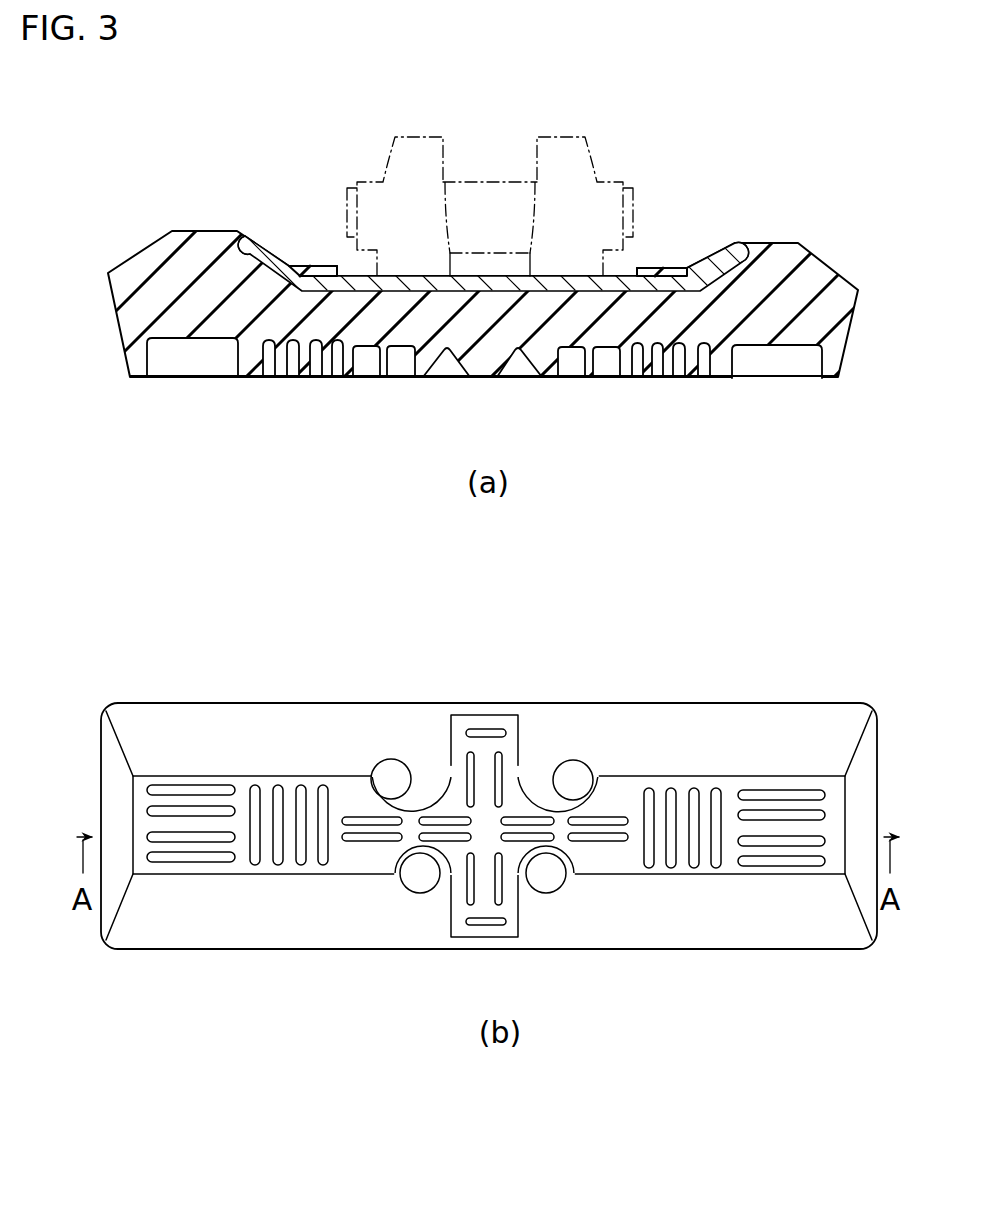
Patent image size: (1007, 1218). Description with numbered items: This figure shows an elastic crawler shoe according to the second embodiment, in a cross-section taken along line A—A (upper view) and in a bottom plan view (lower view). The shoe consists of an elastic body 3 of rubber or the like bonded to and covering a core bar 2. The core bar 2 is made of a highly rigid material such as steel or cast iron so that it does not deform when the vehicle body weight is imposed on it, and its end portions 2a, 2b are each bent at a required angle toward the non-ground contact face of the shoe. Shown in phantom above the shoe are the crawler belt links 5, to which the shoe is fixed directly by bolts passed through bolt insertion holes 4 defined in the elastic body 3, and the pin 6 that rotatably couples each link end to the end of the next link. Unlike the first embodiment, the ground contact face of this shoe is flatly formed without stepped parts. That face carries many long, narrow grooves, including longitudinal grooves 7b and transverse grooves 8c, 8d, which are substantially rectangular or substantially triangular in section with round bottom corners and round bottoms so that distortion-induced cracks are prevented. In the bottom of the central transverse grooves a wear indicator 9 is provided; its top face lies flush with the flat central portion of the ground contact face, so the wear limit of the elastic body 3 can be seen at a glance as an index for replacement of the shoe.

The core bar 2 is at (618, 278).
The end portion of the core bar 2a is at (250, 263).
The end portion of the core bar 2b is at (733, 262).
The elastic body 3 is at (158, 250).
The bolt insertion holes 4 is at (392, 762).
The crawler belt links 5 is at (385, 175).
The pin 6 is at (505, 173).
The longitudinal grooves 7b is at (468, 897).
The transverse grooves 8c is at (437, 365).
The transverse grooves 8d is at (502, 924).
The wear indicator 9 is at (392, 368).